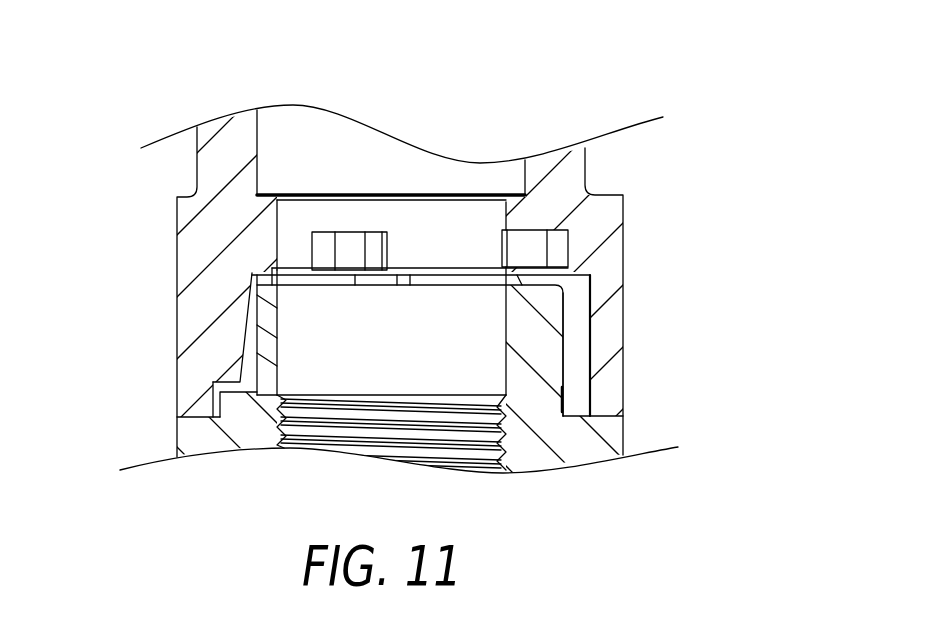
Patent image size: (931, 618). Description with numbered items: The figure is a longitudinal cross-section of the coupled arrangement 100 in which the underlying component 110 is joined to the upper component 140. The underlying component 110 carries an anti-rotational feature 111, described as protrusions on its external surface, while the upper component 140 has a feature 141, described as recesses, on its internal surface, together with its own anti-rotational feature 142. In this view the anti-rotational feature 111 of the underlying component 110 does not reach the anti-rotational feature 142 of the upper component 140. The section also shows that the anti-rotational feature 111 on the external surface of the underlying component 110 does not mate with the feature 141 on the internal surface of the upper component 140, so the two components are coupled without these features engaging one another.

The assembly 100 is at (713, 90).
The underlying component 110 is at (245, 417).
The anti-rotational feature 111 is at (563, 377).
The upper component 140 is at (213, 237).
The feature 141 is at (245, 315).
The anti-rotational feature 142 is at (568, 248).